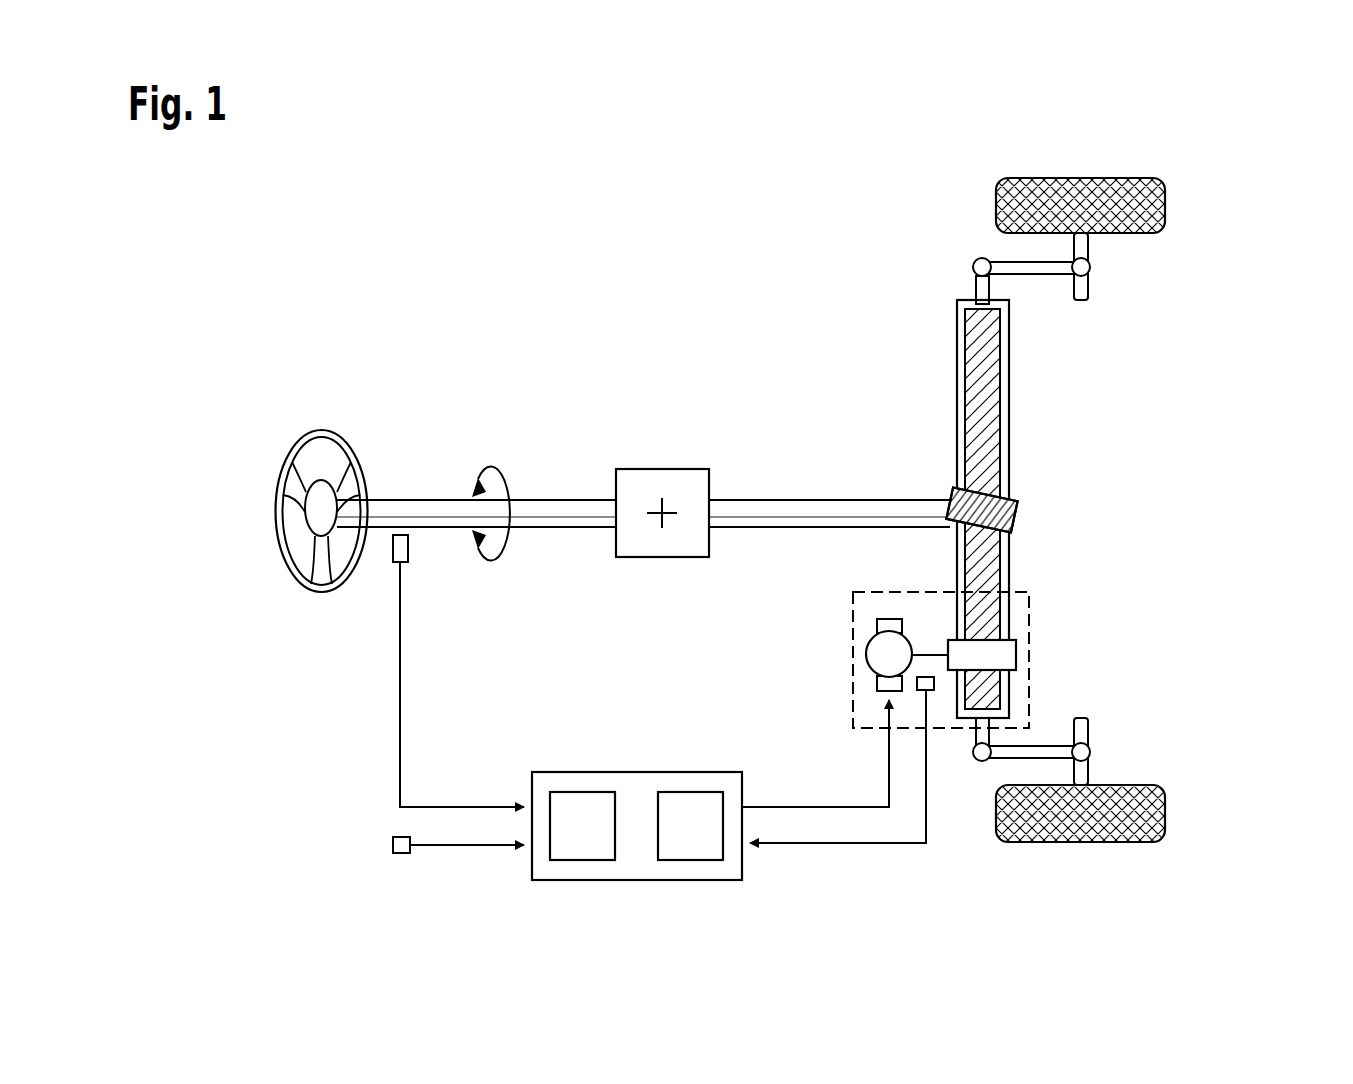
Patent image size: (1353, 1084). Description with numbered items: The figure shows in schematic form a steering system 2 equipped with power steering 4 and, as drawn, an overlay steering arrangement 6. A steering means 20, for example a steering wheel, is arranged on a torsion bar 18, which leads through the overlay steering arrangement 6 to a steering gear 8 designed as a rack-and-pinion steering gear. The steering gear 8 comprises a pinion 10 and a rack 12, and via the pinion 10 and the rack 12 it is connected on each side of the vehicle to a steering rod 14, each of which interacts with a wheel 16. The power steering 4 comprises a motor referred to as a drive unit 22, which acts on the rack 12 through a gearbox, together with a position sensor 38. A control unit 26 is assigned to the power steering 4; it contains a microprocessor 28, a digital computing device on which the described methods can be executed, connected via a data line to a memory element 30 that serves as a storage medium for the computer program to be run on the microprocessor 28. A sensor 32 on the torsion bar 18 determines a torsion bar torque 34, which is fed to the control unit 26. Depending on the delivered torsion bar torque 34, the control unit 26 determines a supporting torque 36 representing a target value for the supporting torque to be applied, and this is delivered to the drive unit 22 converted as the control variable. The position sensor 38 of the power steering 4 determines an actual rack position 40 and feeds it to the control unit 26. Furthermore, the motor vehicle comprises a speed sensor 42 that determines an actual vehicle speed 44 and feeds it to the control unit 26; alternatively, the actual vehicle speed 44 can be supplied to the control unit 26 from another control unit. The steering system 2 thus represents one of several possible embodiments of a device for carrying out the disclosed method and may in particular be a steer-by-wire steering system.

The steering system 2 is at (556, 250).
The power steering 4 is at (852, 618).
The overlay steering arrangement 6 is at (658, 482).
The steering gear 8 is at (932, 474).
The pinion 10 is at (995, 515).
The rack 12 is at (980, 331).
The steering rod 14 is at (990, 264).
The wheel 16 is at (1155, 210).
The torsion bar 18 is at (442, 510).
The steering means 20 is at (300, 432).
The drive unit 22 is at (866, 655).
The control unit 26 is at (640, 773).
The microprocessor 28 is at (588, 793).
The memory element 30 is at (690, 793).
The sensor 32 is at (410, 556).
The torsion bar torque 34 is at (400, 680).
The supporting torque 36 is at (798, 805).
The position sensor 38 is at (926, 676).
The actual rack position 40 is at (845, 846).
The speed sensor 42 is at (390, 845).
The actual vehicle speed 44 is at (445, 848).